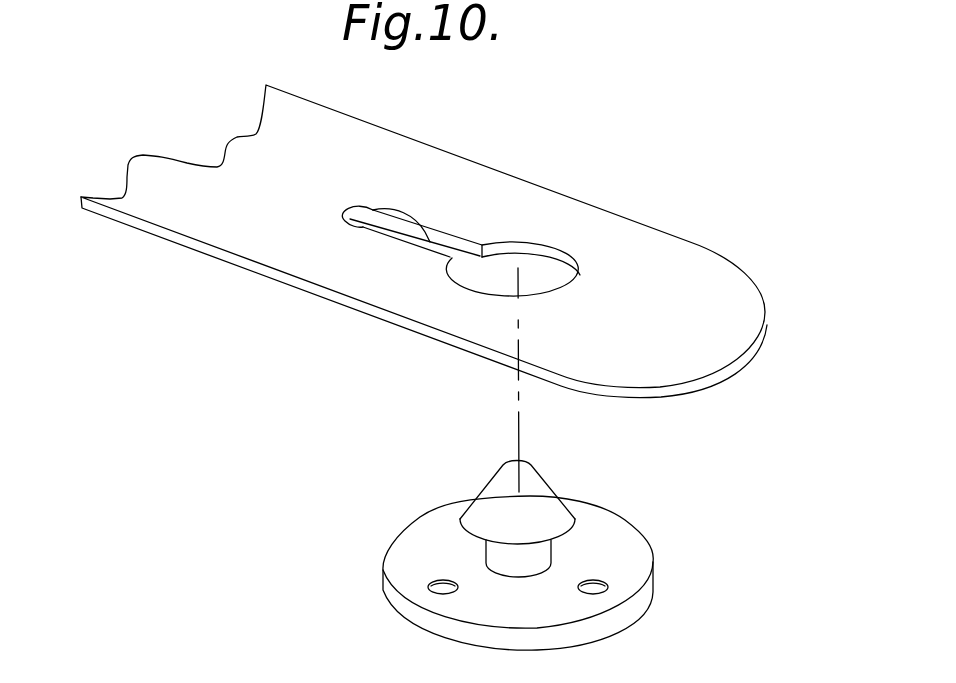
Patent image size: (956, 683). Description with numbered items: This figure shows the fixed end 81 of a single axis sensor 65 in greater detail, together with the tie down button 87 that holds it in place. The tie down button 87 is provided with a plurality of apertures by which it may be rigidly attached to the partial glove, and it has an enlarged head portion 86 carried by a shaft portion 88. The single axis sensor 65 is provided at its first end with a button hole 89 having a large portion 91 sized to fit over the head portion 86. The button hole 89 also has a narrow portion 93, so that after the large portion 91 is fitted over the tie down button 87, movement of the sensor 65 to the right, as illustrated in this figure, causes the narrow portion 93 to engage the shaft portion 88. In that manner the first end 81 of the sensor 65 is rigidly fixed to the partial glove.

The single axis sensor 65 is at (434, 259).
The fixed end 81 is at (524, 553).
The head portion 86 is at (540, 513).
The tie down button 87 is at (592, 622).
The shaft portion 88 is at (503, 559).
The button hole 89 is at (497, 272).
The large portion 91 is at (578, 274).
The narrow portion 93 is at (362, 223).